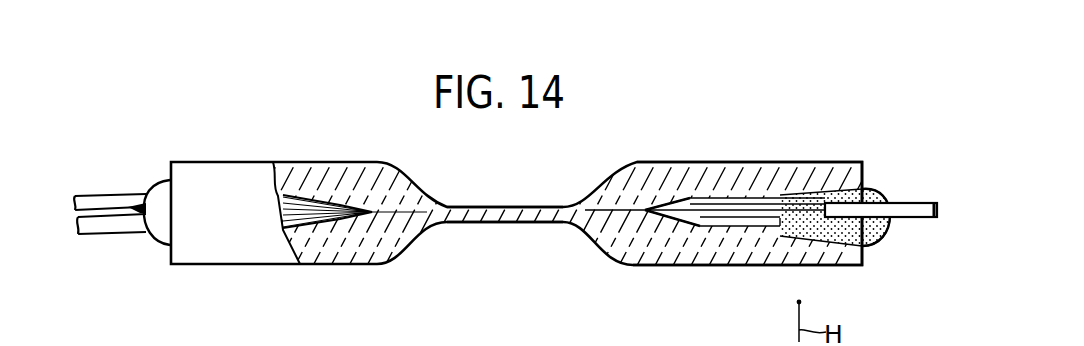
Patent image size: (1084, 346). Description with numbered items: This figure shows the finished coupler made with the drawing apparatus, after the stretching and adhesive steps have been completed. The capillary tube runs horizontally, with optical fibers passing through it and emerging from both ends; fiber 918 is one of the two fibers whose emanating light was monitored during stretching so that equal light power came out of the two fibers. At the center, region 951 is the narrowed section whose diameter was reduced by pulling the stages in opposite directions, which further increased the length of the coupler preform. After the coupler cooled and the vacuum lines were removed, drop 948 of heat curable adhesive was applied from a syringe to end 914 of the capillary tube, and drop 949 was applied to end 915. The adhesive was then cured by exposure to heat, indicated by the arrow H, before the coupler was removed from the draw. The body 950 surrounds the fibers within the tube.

The end of the capillary tube 914 is at (865, 177).
The end of the capillary tube 915 is at (170, 172).
The fiber 918 is at (93, 242).
The drop of heat curable adhesive 948 is at (880, 240).
The drop of heat curable adhesive 949 is at (158, 244).
The insulating body 950 is at (712, 273).
The region 951 is at (500, 224).